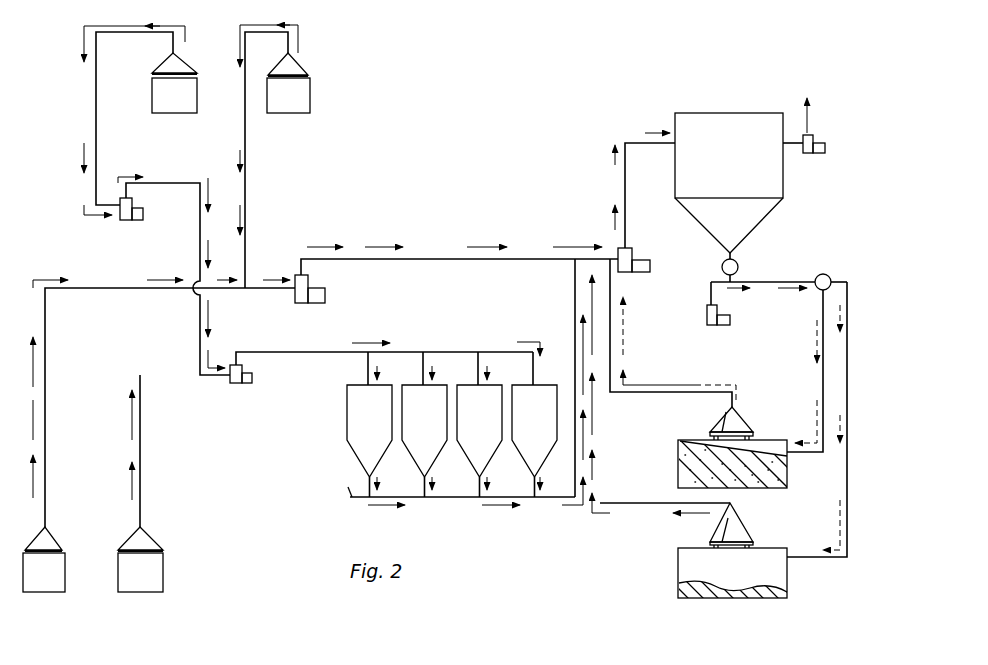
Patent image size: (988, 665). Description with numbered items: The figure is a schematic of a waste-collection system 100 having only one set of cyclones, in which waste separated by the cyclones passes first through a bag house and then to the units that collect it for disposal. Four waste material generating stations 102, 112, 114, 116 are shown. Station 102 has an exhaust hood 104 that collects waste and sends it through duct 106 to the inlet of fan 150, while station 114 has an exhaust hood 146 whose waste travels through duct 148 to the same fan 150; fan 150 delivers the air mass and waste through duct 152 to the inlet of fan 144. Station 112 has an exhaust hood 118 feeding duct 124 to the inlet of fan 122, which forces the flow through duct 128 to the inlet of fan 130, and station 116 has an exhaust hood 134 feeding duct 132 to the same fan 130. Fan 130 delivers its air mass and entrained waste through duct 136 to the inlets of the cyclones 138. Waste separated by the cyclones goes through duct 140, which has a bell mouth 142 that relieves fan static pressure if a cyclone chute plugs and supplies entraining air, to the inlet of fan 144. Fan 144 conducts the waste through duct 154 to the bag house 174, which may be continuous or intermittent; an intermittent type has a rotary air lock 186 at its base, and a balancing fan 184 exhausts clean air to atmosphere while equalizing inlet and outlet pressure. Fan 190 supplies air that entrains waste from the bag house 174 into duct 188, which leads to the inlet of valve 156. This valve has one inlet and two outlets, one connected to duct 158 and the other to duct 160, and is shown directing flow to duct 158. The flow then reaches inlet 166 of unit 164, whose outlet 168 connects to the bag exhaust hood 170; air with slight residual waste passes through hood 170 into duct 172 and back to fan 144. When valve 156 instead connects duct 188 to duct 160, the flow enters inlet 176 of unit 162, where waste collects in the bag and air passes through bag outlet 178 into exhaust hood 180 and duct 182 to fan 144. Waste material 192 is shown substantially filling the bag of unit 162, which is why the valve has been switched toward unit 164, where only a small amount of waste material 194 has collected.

The system 100 is at (465, 110).
The waste material generating station 102 is at (310, 97).
The exhaust hood 104 is at (290, 70).
The duct 106 is at (248, 187).
The waste material generating station 112 is at (187, 105).
The waste material generating station 114 is at (62, 570).
The waste material generating station 116 is at (163, 575).
The exhaust hood 118 is at (180, 68).
The fan 122 is at (123, 220).
The duct 124 is at (96, 108).
The duct 128 is at (200, 247).
The fan 130 is at (306, 350).
The duct 132 is at (143, 460).
The exhaust hood 134 is at (148, 545).
The duct 136 is at (303, 351).
The cyclones 138 is at (518, 388).
The duct 140 is at (526, 498).
The bell mouth 142 is at (352, 498).
The fan 144 is at (632, 252).
The exhaust hood 146 is at (47, 547).
The duct 148 is at (45, 390).
The fan 150 is at (310, 284).
The duct 152 is at (420, 258).
The duct 154 is at (623, 187).
The valve 156 is at (832, 279).
The duct 158 is at (850, 360).
The duct 160 is at (822, 378).
The unit 162 is at (676, 454).
The unit 164 is at (676, 577).
The inlet 166 is at (788, 560).
The outlet 168 is at (722, 545).
The bag exhaust hood 170 is at (737, 520).
The duct 172 is at (600, 413).
The bag house 174 is at (717, 122).
The inlet 176 is at (788, 458).
The bag outlet 178 is at (726, 432).
The exhaust hood 180 is at (742, 420).
The duct 182 is at (612, 324).
The balancing fan 184 is at (812, 137).
The rotary air lock 186 is at (740, 262).
The duct 188 is at (780, 282).
The fan 190 is at (712, 326).
The waste material 192 is at (773, 484).
The waste material 194 is at (698, 590).